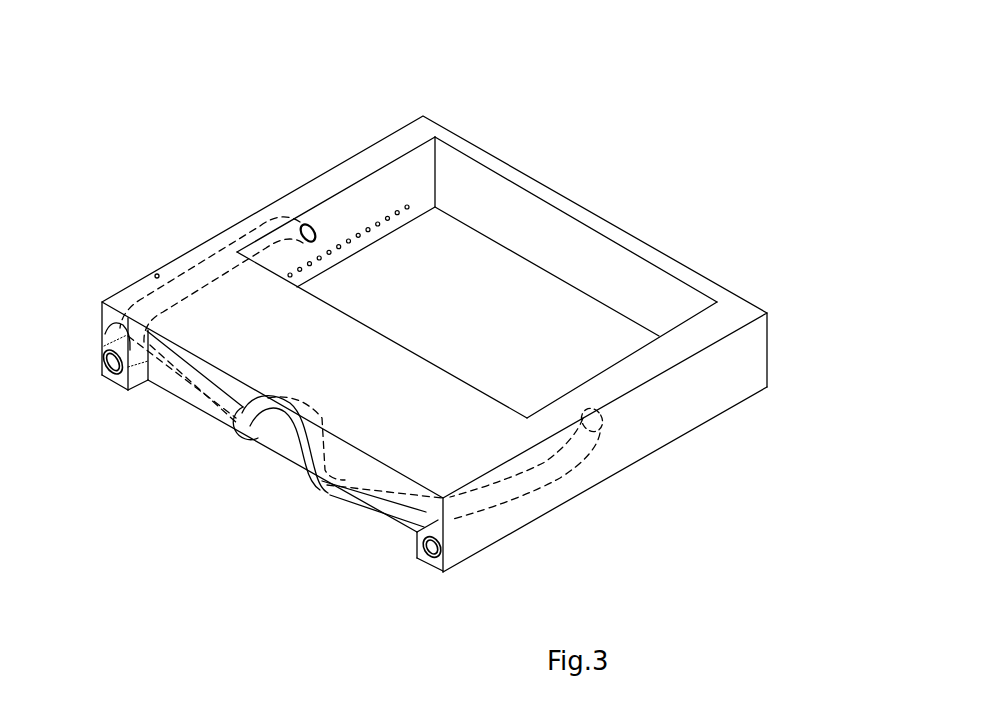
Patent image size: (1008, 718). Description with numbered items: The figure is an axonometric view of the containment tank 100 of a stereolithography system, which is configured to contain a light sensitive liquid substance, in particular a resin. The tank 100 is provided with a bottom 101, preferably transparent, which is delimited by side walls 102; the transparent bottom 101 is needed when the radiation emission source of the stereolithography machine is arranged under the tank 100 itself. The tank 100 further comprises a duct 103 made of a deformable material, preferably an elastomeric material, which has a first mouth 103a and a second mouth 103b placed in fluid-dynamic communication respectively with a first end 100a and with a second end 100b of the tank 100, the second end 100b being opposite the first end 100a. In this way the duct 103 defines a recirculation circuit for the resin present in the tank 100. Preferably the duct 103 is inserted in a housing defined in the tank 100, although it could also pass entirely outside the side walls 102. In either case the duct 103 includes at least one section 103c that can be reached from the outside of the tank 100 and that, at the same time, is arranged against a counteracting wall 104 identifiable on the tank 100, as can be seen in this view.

The tank 100 is at (433, 288).
The first end 100a is at (376, 165).
The second end 100b is at (672, 345).
The bottom 101 is at (483, 295).
The side walls 102 is at (675, 263).
The duct 103 is at (130, 317).
The first mouth 103a is at (300, 225).
The second mouth 103b is at (588, 420).
The section 103c is at (242, 475).
The counteracting wall 104 is at (317, 383).